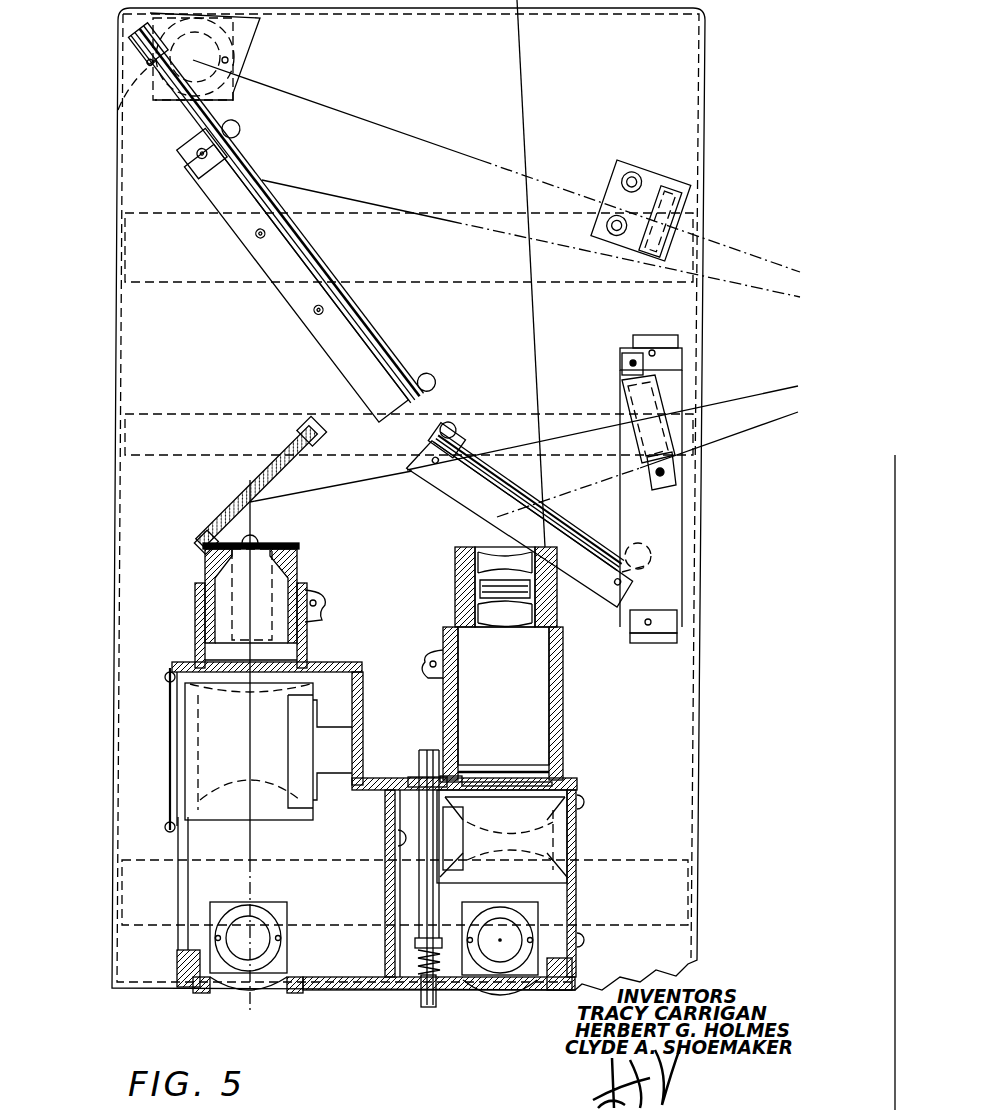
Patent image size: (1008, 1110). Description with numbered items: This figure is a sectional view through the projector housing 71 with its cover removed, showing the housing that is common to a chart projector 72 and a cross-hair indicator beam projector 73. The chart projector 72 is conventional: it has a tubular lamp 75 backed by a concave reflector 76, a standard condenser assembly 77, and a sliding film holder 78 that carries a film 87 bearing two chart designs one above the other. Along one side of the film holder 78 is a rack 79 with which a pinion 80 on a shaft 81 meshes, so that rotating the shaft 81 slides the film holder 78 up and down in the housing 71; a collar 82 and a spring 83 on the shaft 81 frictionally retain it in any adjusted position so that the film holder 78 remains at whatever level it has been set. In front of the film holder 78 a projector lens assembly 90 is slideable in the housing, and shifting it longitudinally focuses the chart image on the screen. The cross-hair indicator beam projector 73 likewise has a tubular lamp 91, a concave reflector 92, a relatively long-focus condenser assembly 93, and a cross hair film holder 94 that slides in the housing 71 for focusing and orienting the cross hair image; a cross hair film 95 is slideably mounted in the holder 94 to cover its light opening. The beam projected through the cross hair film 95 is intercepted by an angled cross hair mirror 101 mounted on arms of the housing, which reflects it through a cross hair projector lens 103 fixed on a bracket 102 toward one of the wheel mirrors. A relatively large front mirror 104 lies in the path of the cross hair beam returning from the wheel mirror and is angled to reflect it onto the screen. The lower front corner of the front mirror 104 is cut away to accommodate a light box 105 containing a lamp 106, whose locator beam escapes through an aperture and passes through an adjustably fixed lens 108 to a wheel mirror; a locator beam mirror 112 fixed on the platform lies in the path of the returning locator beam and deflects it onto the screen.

The projector housing 71 is at (343, 990).
The chart projector 72 is at (600, 830).
The cross-hair indicator beam projector 73 is at (165, 758).
The T-8 lamp 75 is at (497, 955).
The concave reflector 76 is at (528, 980).
The condenser assembly 77 is at (560, 852).
The sliding film holder 78 is at (568, 776).
The rack 79 is at (450, 780).
The pinion 80 is at (413, 778).
The shaft 81 is at (428, 898).
The collar 82 is at (424, 945).
The spring 83 is at (423, 1000).
The film 87 is at (543, 780).
The projector lens assembly 90 is at (557, 612).
The T-8 lamp 91 is at (230, 946).
The concave reflector 92 is at (232, 992).
The long-focus condenser assembly 93 is at (206, 778).
The cross hair film holder 94 is at (297, 565).
The cross hair film 95 is at (296, 548).
The cross hair mirror 101 is at (267, 481).
The bracket 102 is at (630, 500).
The cross hair projector lens 103 is at (640, 402).
The front mirror 104 is at (336, 262).
The light box 105 is at (243, 42).
The lamp 106 is at (118, 110).
The lens 108 is at (668, 188).
The locator beam mirror 112 is at (597, 553).